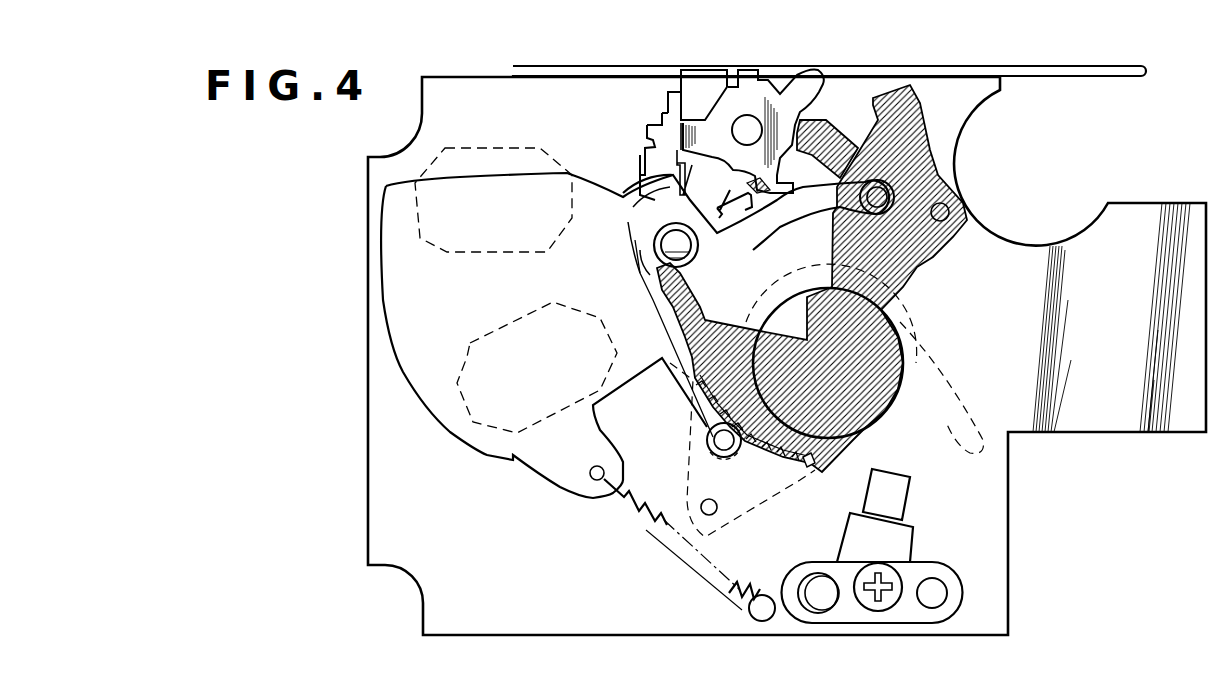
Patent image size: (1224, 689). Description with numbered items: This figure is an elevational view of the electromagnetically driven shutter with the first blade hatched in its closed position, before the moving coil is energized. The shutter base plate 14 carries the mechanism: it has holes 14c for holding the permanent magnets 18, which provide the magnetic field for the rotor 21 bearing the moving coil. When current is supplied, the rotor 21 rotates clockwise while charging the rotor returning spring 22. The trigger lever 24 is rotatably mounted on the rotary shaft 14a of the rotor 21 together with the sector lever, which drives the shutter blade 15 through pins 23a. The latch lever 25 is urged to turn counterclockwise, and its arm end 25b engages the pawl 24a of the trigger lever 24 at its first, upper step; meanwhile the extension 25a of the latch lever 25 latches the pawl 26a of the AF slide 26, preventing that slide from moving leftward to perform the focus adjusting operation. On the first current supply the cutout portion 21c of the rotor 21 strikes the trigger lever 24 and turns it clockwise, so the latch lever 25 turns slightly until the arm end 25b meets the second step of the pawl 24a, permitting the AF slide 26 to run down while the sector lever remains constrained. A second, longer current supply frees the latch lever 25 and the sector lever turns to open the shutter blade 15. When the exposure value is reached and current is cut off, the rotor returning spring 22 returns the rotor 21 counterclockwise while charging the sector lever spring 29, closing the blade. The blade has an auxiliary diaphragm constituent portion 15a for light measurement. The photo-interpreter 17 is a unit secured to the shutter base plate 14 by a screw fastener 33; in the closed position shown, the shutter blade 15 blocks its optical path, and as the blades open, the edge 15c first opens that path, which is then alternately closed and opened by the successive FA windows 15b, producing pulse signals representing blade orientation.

The shutter base plate 14 is at (550, 638).
The rotary shaft 14a is at (664, 250).
The holes 14c is at (704, 500).
The shutter blade 15 is at (913, 262).
The auxiliary diaphragm constituent portion 15a is at (813, 120).
The FA windows 15b is at (807, 462).
The edge 15c is at (840, 458).
The photo-interpreter 17 is at (845, 620).
The permanent magnets 18 is at (462, 358).
The rotor 21 is at (563, 472).
The cutout portion 21c is at (643, 205).
The rotor returning spring 22 is at (728, 593).
The pins 23a is at (710, 438).
The trigger lever 24 is at (672, 103).
The pawl 24a is at (628, 153).
The latch lever 25 is at (816, 68).
The extension 25a is at (668, 105).
The arm end 25b is at (648, 130).
The AF slide 26 is at (1035, 69).
The pawl 26a is at (696, 75).
The sector lever spring 29 is at (645, 228).
The screw fastener 33 is at (885, 608).